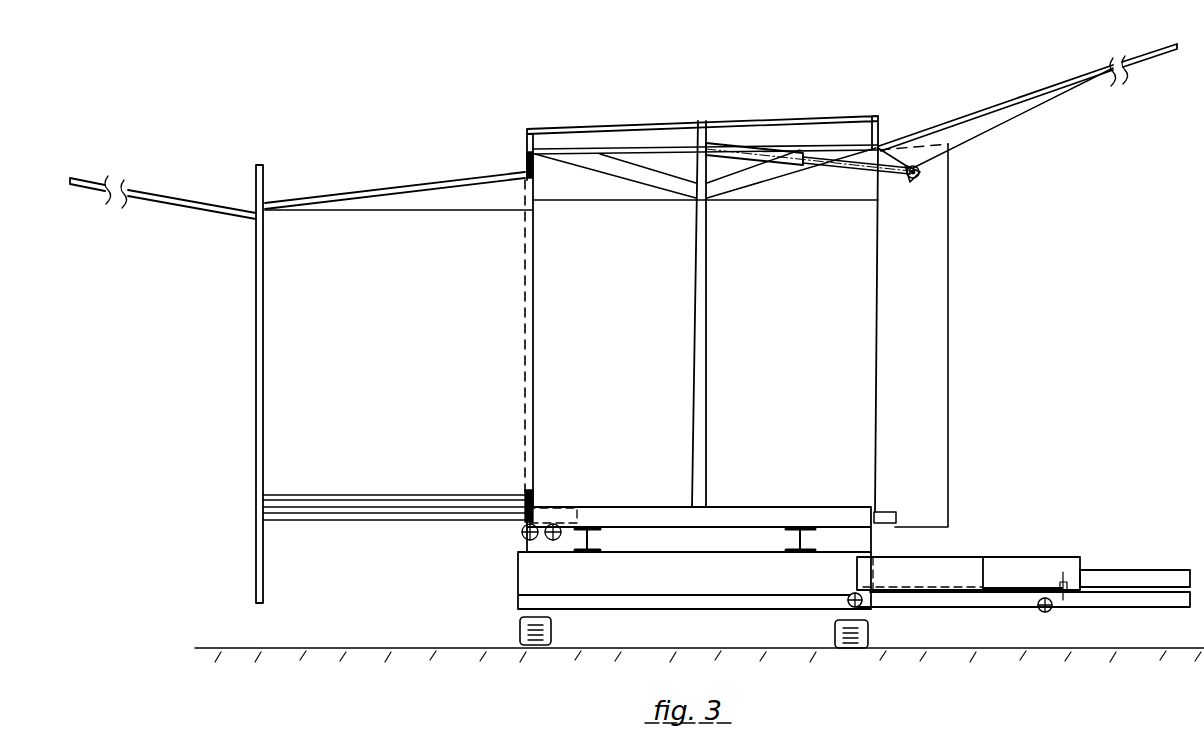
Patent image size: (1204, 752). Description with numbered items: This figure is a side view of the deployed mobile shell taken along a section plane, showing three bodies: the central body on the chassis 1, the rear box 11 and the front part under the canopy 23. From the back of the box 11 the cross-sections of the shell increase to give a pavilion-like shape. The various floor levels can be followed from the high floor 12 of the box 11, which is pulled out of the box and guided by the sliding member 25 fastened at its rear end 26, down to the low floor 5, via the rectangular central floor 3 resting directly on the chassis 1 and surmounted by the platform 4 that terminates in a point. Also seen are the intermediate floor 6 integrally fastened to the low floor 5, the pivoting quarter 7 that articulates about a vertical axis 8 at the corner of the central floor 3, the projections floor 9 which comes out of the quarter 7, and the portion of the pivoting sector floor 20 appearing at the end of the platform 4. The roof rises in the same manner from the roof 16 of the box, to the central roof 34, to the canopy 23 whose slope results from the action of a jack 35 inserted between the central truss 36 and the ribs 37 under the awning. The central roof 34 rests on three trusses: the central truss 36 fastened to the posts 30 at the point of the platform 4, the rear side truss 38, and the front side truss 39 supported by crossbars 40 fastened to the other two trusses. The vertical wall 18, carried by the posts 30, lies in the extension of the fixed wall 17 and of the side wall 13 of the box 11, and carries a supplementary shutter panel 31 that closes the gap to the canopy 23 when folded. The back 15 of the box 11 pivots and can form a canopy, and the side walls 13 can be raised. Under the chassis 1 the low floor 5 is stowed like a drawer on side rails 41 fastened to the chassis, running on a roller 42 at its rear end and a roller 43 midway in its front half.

The chassis 1 is at (753, 552).
The central floor 3 is at (664, 505).
The platform 4 is at (764, 505).
The low floor 5 is at (1168, 588).
The intermediate floor 6 is at (935, 555).
The pivoting quarter 7 is at (1040, 555).
The vertical axis 8 is at (875, 483).
The projections floor 9 is at (1128, 565).
The box 11 is at (245, 366).
The high floor 12 is at (375, 497).
The side wall 13 is at (404, 361).
The back 15 is at (118, 176).
The roof 16 is at (417, 182).
The fixed wall 17 is at (624, 362).
The vertical wall 18 is at (792, 362).
The pivoting sector floor 20 is at (885, 512).
The canopy 23 is at (1058, 80).
The sliding member 25 is at (348, 516).
The rear end 26 is at (264, 528).
The post 30 is at (707, 268).
The supplementary shutter panel 31 is at (921, 366).
The central roof 34 is at (612, 115).
The jack 35 is at (790, 165).
The central truss 36 is at (710, 149).
The rib 37 is at (990, 143).
The rear side truss 38 is at (527, 160).
The front side truss 39 is at (878, 146).
The crossbar 40 is at (677, 133).
The rail 41 is at (683, 605).
The roller 42 is at (860, 597).
The roller 43 is at (1045, 610).